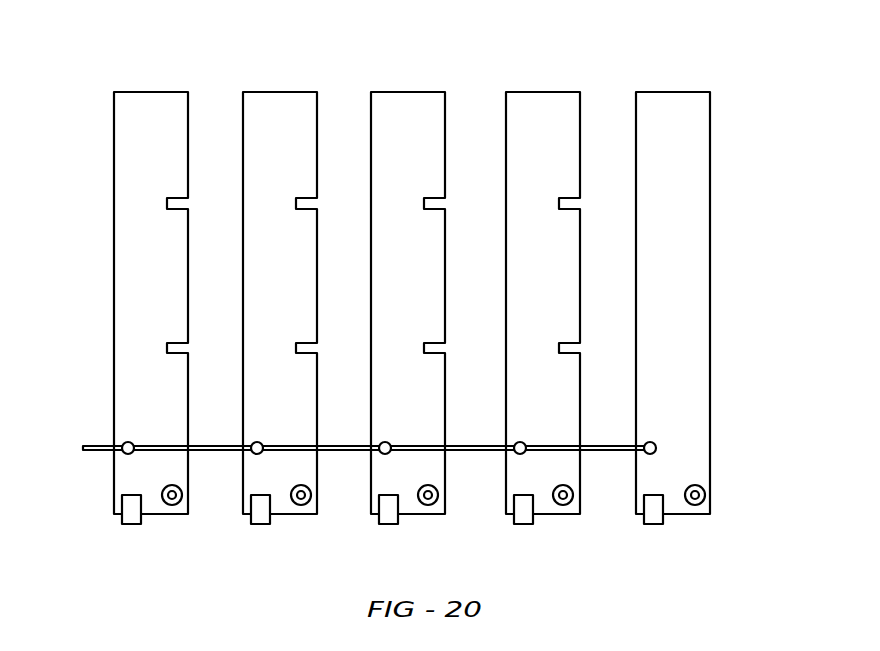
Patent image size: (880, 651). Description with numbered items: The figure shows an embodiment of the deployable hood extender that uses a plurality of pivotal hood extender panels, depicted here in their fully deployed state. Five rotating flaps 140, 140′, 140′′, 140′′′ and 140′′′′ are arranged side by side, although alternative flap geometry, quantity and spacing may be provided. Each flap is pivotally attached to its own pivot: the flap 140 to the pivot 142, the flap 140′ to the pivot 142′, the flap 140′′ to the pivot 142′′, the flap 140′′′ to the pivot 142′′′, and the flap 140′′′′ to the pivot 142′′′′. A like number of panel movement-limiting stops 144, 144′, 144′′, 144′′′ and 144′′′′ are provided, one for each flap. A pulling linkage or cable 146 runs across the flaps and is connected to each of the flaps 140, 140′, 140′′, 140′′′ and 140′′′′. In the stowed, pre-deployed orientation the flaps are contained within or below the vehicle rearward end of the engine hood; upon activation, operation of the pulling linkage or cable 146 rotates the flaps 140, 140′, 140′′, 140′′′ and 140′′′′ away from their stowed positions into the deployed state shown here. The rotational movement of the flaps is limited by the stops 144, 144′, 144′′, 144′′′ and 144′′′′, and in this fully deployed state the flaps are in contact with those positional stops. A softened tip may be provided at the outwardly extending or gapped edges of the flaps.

The rotating flap 140 is at (152, 113).
The rotating flap 140′ is at (279, 107).
The rotating flap 140′′ is at (401, 107).
The rotating flap 140′′′ is at (535, 107).
The rotating flap 140′′′′ is at (672, 110).
The pivot 142 is at (167, 508).
The pivot 142′ is at (297, 503).
The pivot 142′′ is at (428, 507).
The pivot 142′′′ is at (565, 507).
The pivot 142′′′′ is at (700, 488).
The stop 144 is at (131, 515).
The stop 144′ is at (259, 517).
The stop 144′′ is at (389, 516).
The stop 144′′′ is at (523, 517).
The stop 144′′′′ is at (655, 514).
The pulling linkage or cable 146 is at (99, 445).